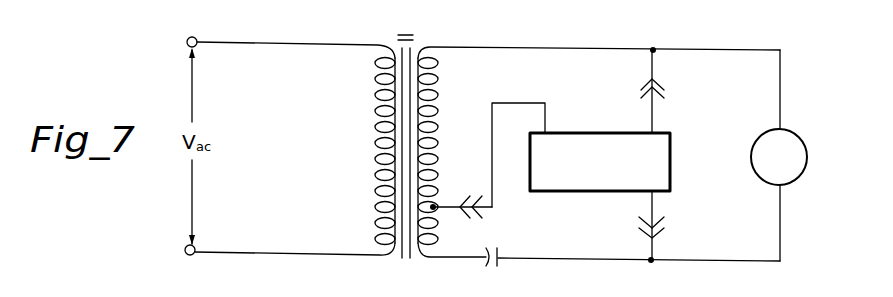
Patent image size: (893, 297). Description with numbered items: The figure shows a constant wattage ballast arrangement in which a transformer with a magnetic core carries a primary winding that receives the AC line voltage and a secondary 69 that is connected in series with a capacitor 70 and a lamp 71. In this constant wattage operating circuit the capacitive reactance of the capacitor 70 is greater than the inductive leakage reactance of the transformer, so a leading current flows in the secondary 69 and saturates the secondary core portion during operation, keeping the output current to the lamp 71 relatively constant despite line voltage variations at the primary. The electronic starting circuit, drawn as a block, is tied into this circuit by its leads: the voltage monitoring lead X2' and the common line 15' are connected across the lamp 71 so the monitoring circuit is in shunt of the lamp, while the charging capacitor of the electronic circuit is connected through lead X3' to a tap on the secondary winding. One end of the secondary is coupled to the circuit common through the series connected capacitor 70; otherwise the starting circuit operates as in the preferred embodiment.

The secondary 69 is at (382, 97).
The capacitor 70 is at (498, 257).
The lamp 71 is at (800, 141).
The common line 15' is at (668, 227).
The voltage monitoring lead X2' is at (669, 90).
The lead X3' is at (492, 141).